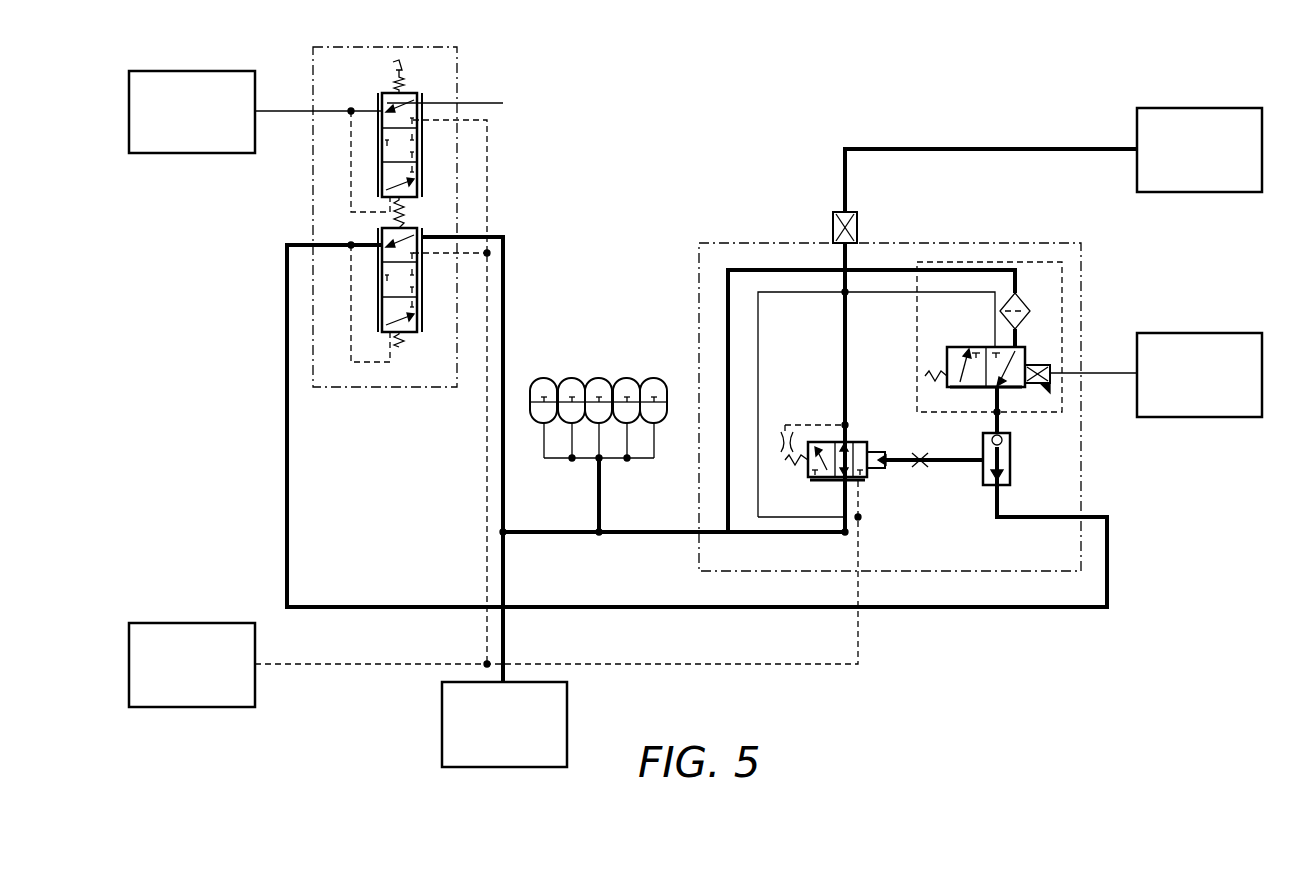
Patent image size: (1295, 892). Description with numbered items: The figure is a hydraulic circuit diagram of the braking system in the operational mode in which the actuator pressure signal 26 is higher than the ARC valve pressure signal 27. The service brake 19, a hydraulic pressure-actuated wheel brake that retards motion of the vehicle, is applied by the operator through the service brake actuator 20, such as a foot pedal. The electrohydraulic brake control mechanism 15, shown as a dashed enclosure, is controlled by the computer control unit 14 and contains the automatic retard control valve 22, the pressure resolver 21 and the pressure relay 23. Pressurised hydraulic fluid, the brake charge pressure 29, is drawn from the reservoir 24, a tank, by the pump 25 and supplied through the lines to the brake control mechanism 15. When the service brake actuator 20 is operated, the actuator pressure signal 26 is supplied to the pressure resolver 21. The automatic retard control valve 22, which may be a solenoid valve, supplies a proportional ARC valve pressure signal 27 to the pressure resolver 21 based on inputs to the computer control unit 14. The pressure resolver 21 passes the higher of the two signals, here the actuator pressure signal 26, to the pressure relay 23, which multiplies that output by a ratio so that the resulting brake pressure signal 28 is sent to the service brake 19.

The computer control unit 14 is at (1156, 375).
The brake control mechanism 15 is at (1083, 268).
The service brake 19 is at (1199, 150).
The service brake actuator 20 is at (256, 112).
The pressure resolver 21 is at (1012, 470).
The automatic retard control valve 22 is at (1027, 260).
The pressure relay 23 is at (864, 440).
The reservoir 24 is at (495, 592).
The pump 25 is at (504, 724).
The actuator pressure signal 26 is at (943, 609).
The ARC valve pressure signal 27 is at (1003, 425).
The brake pressure signal 28 is at (929, 148).
The brake charge pressure 29 is at (507, 313).